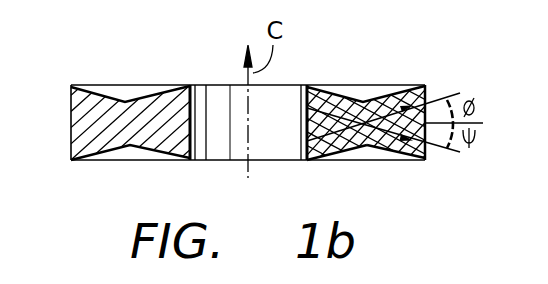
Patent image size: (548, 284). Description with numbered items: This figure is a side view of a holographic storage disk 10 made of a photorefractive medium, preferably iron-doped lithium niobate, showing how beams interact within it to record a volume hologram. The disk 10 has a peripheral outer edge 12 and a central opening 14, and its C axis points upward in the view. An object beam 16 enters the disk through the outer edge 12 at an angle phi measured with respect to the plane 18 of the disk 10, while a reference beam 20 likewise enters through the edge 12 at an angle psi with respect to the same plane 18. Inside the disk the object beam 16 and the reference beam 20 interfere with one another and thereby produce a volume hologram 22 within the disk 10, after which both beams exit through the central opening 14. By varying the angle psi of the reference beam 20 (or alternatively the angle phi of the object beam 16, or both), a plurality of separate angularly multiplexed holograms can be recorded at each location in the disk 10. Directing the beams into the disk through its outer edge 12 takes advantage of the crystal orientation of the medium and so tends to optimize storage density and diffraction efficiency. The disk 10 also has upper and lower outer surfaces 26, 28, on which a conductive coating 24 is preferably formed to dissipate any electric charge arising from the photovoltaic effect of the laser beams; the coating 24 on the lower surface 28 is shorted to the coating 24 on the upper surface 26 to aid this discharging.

The disk 10 is at (400, 84).
The peripheral outer edge 12 is at (70, 118).
The central opening 14 is at (213, 86).
The object beam 16 is at (453, 94).
The plane of the disk 18 is at (483, 121).
The reference beam 20 is at (455, 156).
The volume hologram 22 is at (322, 161).
The conductive coating 24 is at (88, 160).
The upper outer surface 26 is at (86, 89).
The lower outer surface 28 is at (400, 163).